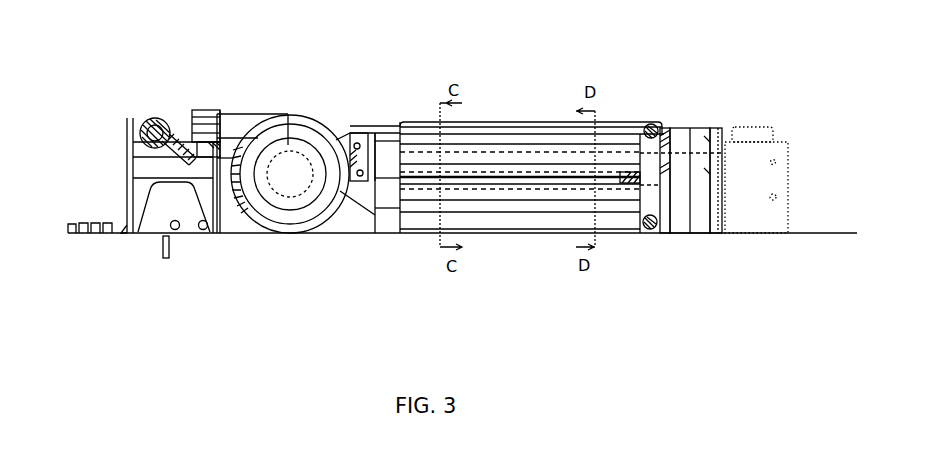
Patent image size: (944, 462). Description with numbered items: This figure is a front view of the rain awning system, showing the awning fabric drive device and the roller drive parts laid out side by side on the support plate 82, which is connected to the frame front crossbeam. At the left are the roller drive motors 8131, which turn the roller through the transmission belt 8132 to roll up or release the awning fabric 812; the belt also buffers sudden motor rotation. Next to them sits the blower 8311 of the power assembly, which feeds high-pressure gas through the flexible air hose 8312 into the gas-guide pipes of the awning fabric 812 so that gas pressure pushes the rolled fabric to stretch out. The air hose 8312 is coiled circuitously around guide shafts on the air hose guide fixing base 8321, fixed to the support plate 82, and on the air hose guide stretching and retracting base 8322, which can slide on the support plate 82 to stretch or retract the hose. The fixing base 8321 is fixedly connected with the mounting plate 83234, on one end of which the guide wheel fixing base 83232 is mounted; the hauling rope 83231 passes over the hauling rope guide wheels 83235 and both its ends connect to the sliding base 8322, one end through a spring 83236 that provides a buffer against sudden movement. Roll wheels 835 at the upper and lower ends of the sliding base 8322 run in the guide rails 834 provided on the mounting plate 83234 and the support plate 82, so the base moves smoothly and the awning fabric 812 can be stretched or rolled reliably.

The support plate 82 is at (795, 233).
The awning fabric 812 is at (160, 118).
The roller drive motor 8131 is at (213, 235).
The transmission belt 8132 is at (126, 233).
The blower 8311 is at (279, 124).
The air hose 8312 is at (490, 150).
The air hose guide fixing base 8321 is at (387, 222).
The air hose guide stretching and retracting base 8322 is at (683, 233).
The hauling rope 83231 is at (672, 128).
The guide wheel fixing base 83232 is at (352, 195).
The mounting plate 83234 is at (355, 135).
The hauling rope guide wheel 83235 is at (703, 132).
The spring 83236 is at (637, 173).
The guide rail 834 is at (555, 122).
The roll wheel 835 is at (647, 123).